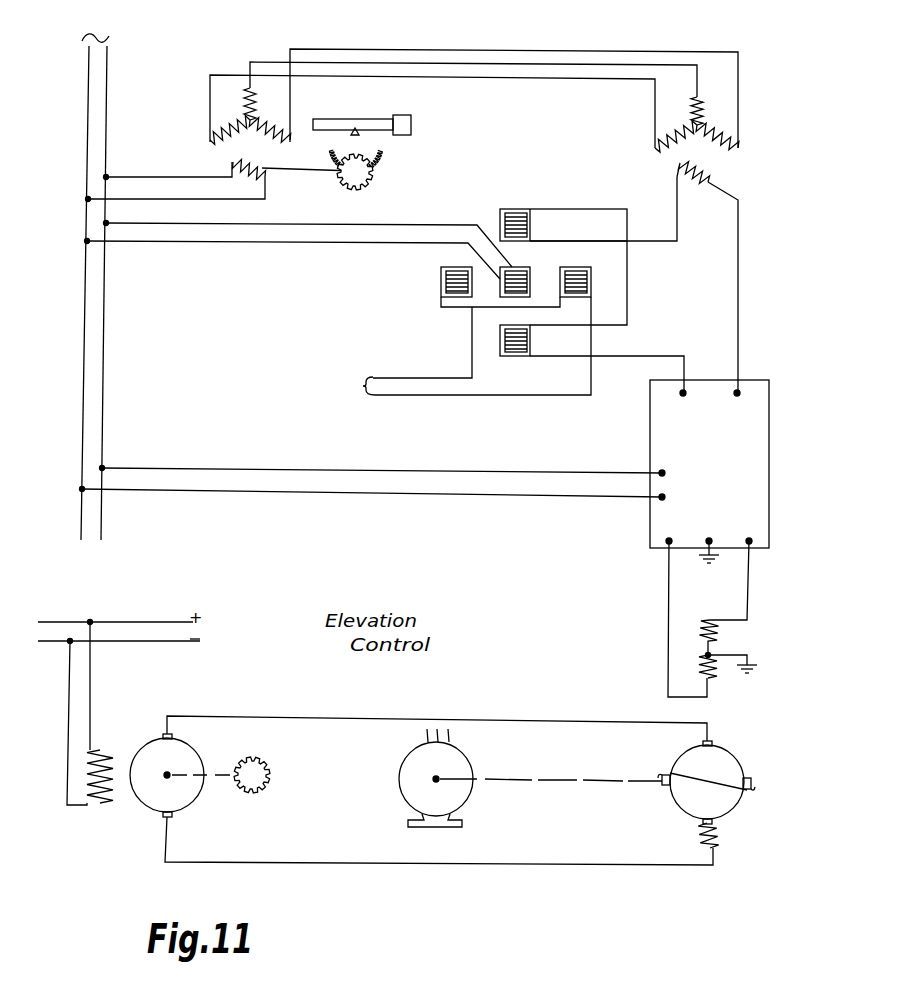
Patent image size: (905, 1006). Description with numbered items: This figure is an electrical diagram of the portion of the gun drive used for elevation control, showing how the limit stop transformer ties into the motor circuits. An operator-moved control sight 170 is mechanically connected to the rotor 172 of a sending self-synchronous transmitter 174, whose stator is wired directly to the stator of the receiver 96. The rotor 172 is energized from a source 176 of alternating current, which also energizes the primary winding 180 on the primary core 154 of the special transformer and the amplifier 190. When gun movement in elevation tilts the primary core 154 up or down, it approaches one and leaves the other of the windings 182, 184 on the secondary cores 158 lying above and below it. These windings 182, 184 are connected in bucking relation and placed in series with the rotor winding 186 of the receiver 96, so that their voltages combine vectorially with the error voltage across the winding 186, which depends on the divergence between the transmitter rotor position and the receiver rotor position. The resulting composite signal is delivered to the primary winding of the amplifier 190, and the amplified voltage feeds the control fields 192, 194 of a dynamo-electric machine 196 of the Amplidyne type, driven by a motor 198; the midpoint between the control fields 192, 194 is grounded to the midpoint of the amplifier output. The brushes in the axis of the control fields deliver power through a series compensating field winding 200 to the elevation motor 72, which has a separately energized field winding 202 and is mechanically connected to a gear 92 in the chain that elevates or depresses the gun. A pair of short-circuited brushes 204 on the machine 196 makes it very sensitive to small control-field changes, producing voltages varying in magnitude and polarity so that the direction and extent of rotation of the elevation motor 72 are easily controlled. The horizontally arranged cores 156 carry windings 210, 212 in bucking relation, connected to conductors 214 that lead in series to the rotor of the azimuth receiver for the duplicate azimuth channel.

The elevation motor 72 is at (145, 807).
The gear 92 is at (265, 765).
The receiver 96 is at (741, 159).
The primary core 154 is at (512, 292).
The secondary cores 156 is at (448, 275).
The secondary cores 158 is at (517, 215).
The control sight 170 is at (360, 118).
The rotor 172 is at (263, 178).
The self-synchronous transmitter 174 is at (196, 152).
The source of alternating current 176 is at (107, 83).
The primary winding 180 is at (528, 268).
The winding 182 is at (532, 228).
The winding 184 is at (532, 343).
The rotor winding 186 is at (709, 182).
The amplifier 190 is at (663, 420).
The control field 192 is at (712, 633).
The control field 194 is at (713, 675).
The dynamo-electric machine 196 is at (737, 758).
The motor 198 is at (410, 795).
The compensating field winding 200 is at (713, 840).
The field winding 202 is at (98, 752).
The short-circuited brushes 204 is at (751, 778).
The winding 210 is at (441, 292).
The winding 212 is at (592, 282).
The conductors 214 is at (351, 386).